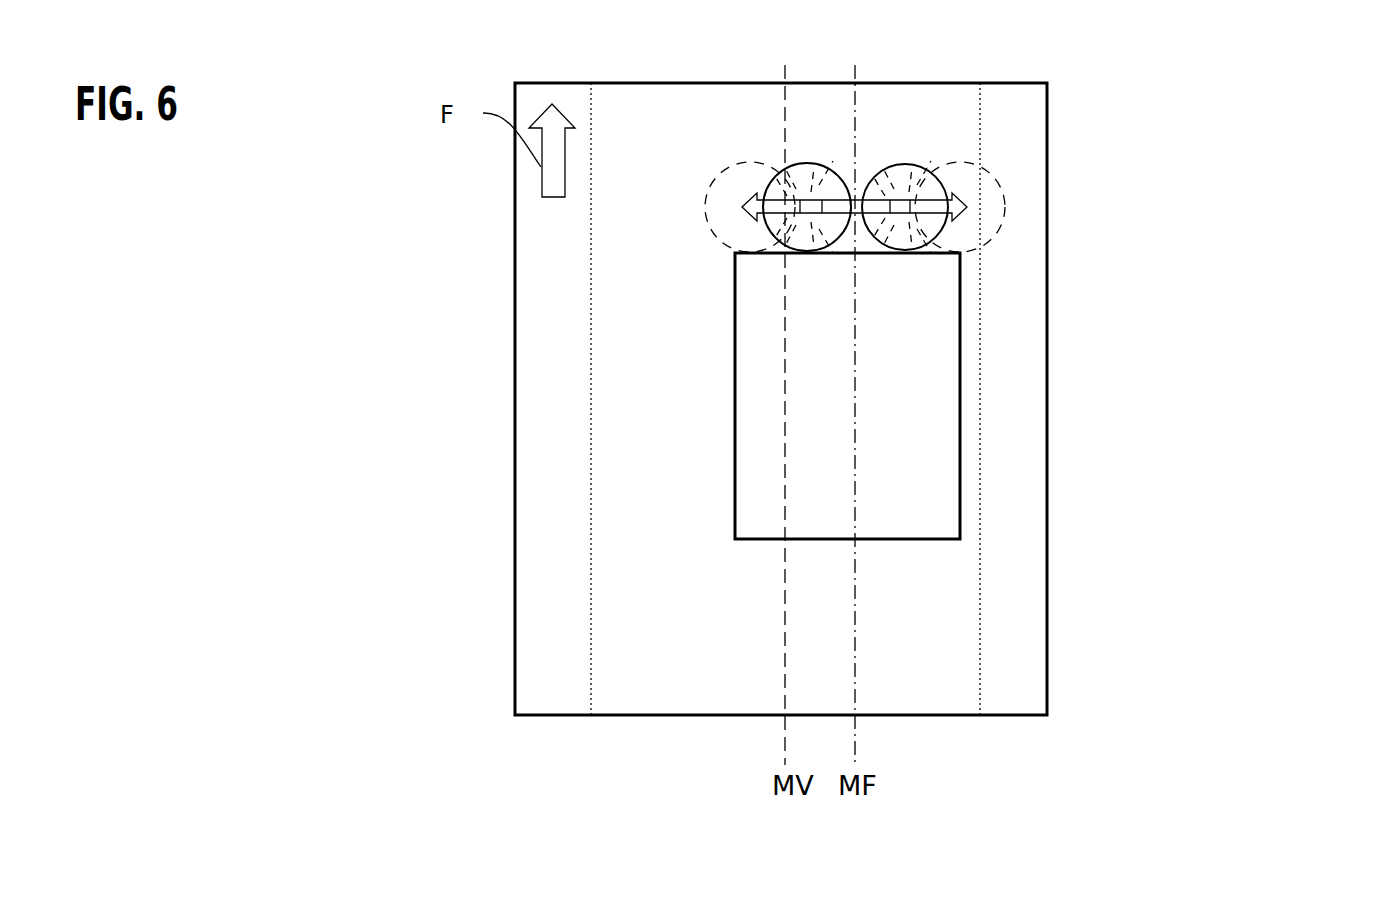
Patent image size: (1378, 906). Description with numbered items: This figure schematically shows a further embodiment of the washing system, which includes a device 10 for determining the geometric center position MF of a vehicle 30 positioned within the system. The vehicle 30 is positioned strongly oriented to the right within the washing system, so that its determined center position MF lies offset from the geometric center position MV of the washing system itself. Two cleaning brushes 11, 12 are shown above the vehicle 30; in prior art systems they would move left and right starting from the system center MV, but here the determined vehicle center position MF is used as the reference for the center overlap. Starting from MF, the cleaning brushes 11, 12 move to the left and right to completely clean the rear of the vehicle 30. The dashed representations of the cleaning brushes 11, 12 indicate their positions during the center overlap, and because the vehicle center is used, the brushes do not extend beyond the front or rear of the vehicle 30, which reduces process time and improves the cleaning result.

The device 10 is at (1172, 165).
The cleaning brush 11 is at (797, 163).
The cleaning brush 12 is at (917, 163).
The vehicle 30 is at (960, 322).